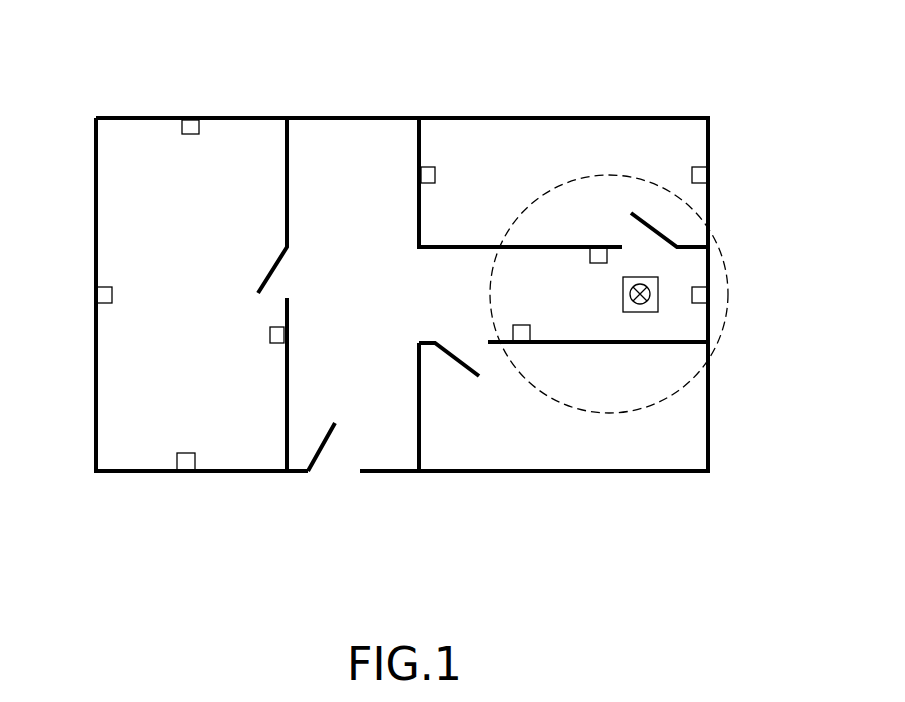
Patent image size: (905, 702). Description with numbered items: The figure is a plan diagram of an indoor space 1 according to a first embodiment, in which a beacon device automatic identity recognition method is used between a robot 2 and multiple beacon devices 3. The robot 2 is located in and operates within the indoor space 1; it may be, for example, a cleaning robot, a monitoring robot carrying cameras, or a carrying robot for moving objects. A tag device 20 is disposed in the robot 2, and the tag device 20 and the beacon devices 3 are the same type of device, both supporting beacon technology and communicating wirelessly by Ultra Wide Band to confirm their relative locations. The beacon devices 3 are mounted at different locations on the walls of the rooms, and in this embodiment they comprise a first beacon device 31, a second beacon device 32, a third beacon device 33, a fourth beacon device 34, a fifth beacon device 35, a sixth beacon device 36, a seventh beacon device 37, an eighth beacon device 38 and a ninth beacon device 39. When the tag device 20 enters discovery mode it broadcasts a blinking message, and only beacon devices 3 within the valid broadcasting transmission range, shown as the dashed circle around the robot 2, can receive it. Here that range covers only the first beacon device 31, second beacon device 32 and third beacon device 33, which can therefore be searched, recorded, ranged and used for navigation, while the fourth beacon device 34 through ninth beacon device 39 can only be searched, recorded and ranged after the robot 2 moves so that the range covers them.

The indoor space 1 is at (371, 117).
The robot 2 is at (625, 334).
The tag device 20 is at (641, 312).
The beacon devices 3 is at (735, 116).
The first beacon device 31 is at (590, 257).
The second beacon device 32 is at (530, 333).
The third beacon device 33 is at (708, 293).
The fourth beacon device 34 is at (708, 175).
The fifth beacon device 35 is at (435, 175).
The sixth beacon device 36 is at (190, 134).
The seventh beacon device 37 is at (112, 295).
The eighth beacon device 38 is at (184, 453).
The ninth beacon device 39 is at (270, 335).